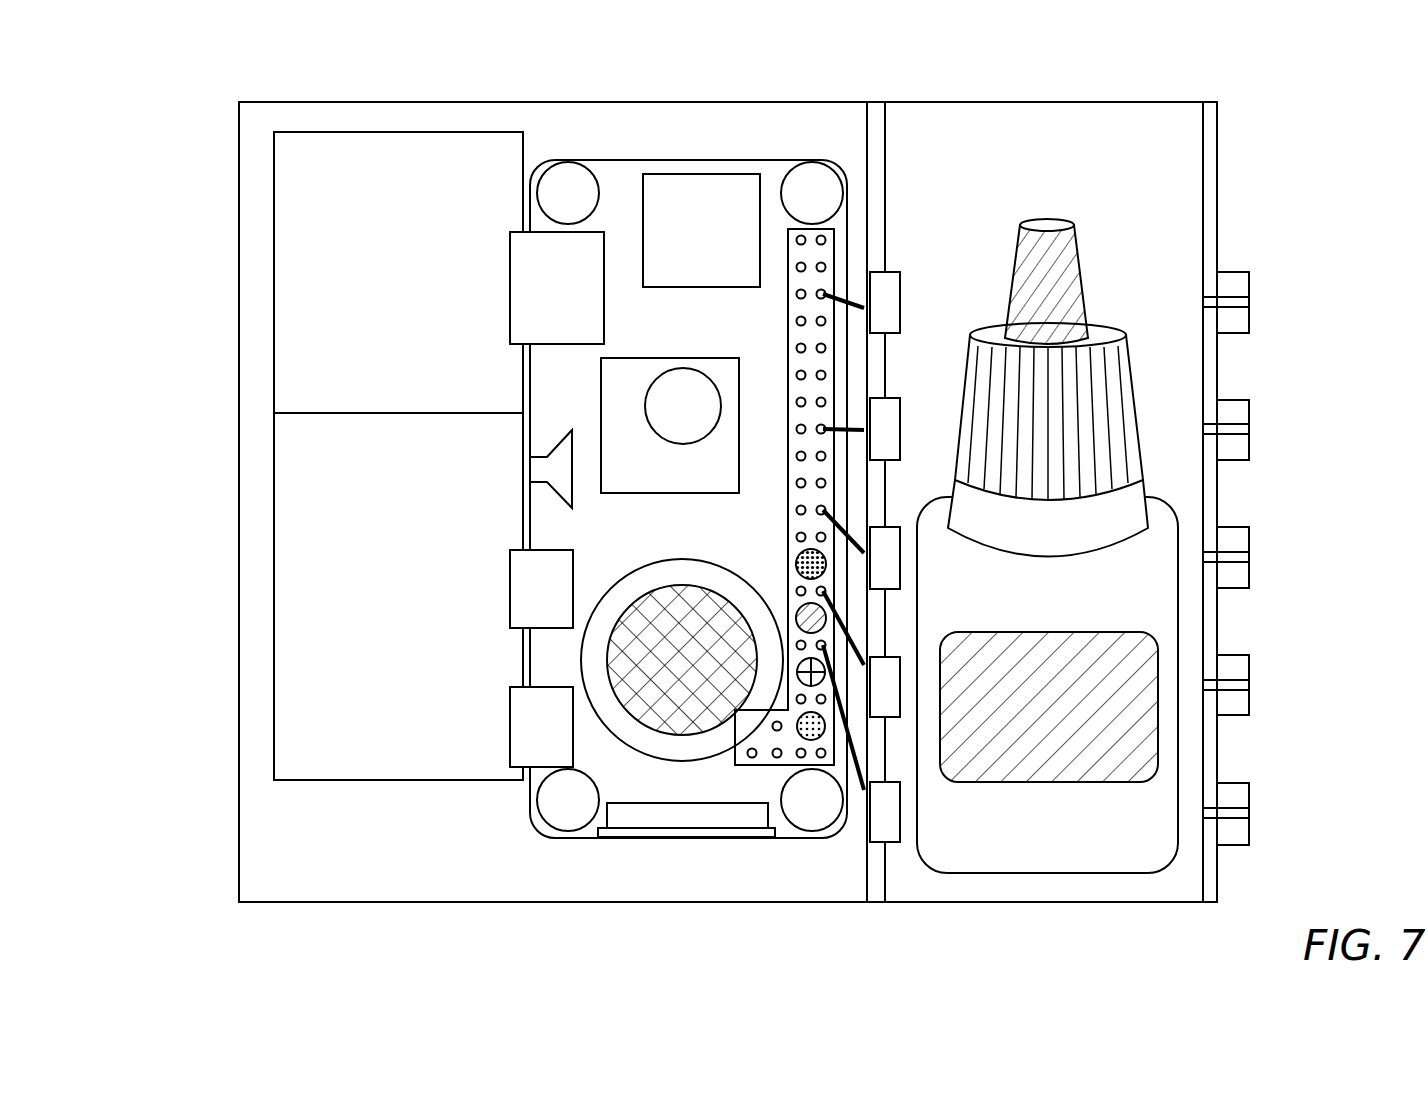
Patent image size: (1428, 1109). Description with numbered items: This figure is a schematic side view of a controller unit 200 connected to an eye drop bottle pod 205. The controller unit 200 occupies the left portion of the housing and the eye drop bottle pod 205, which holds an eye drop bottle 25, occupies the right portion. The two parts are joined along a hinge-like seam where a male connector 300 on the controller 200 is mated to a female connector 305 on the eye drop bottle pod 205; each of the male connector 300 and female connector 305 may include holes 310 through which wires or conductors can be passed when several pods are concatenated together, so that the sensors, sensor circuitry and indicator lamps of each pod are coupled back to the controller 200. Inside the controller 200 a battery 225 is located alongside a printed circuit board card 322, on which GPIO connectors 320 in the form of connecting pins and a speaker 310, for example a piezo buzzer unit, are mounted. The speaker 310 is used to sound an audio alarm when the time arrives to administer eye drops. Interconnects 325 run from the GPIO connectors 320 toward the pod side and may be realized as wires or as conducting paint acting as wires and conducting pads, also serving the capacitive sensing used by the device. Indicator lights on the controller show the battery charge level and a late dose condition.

The controller unit 200 is at (356, 102).
The eye drop bottle pod 205 is at (1180, 185).
The battery 225 is at (398, 456).
The solution bottle 25 is at (1047, 546).
The male connector 300 is at (883, 303).
The female connector 305 is at (902, 272).
The speaker 310 is at (1305, 300).
The GPIO connectors 320 is at (701, 230).
The printed circuit board card 322 is at (645, 325).
The interconnects 325 is at (867, 648).